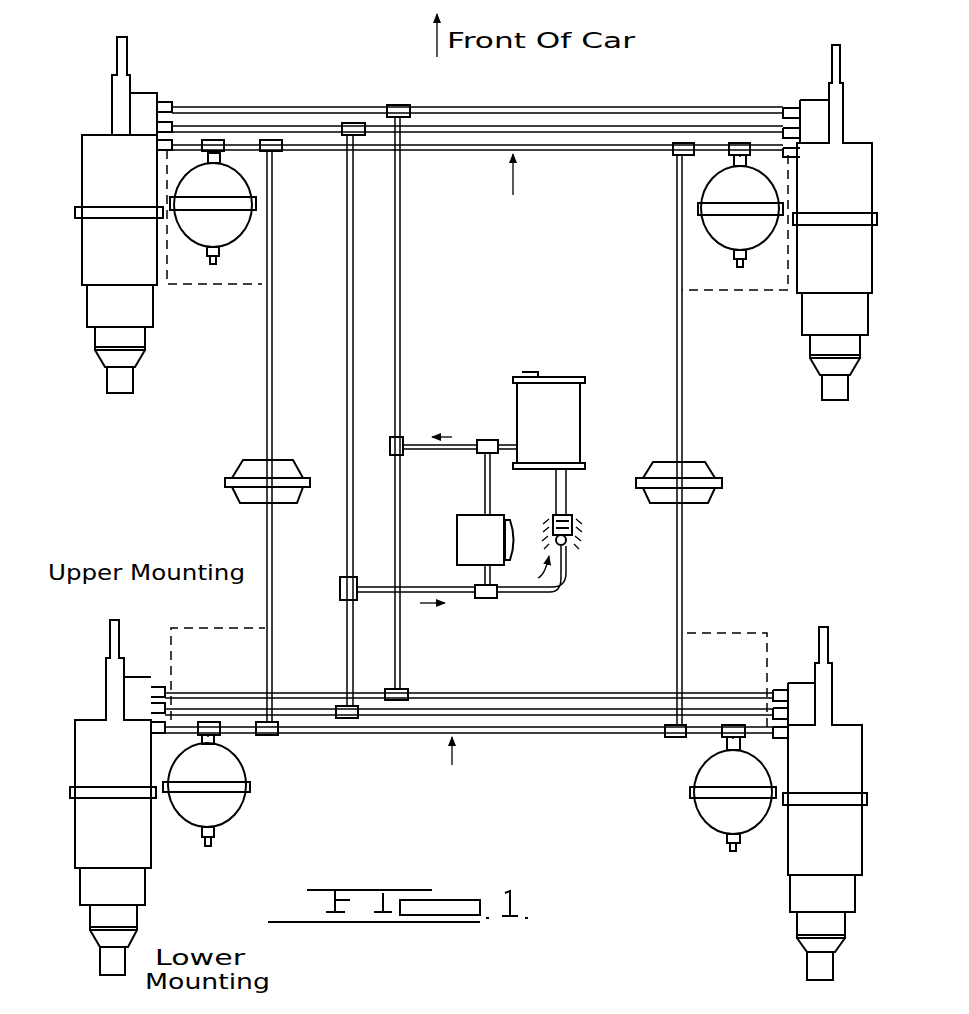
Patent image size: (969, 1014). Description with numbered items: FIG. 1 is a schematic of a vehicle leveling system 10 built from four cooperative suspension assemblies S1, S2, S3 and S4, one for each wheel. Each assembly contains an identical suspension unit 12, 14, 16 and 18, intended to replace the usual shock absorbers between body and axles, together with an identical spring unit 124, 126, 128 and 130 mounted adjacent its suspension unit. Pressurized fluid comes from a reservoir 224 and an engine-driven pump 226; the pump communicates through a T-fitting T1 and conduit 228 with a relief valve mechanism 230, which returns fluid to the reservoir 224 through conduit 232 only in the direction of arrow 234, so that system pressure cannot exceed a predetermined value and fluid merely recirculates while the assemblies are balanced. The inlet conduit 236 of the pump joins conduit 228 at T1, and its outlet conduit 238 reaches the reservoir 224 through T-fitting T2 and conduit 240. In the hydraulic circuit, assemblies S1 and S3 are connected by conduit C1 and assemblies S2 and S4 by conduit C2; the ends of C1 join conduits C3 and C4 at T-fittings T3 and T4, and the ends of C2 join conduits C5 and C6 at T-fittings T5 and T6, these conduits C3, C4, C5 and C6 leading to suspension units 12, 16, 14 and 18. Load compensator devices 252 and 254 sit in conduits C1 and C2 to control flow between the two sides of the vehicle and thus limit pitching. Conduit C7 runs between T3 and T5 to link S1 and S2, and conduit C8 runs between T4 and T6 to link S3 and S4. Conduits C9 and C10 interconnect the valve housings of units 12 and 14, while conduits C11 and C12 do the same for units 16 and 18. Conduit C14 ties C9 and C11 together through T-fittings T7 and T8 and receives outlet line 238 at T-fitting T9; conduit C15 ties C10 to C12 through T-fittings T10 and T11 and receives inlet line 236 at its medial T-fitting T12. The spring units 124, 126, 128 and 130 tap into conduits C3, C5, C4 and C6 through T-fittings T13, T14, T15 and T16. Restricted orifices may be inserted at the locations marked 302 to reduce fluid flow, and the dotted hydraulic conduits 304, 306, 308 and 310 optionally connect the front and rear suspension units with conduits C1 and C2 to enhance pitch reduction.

The vehicle leveling system 10 is at (642, 84).
The suspension unit 12 is at (858, 142).
The suspension unit 14 is at (96, 134).
The suspension unit 16 is at (858, 724).
The suspension unit 18 is at (88, 717).
The suspension assembly S1 is at (798, 99).
The suspension assembly S2 is at (152, 62).
The suspension assembly S3 is at (846, 667).
The suspension assembly S4 is at (149, 659).
The spring unit 124 is at (737, 268).
The spring unit 126 is at (245, 237).
The spring unit 128 is at (690, 781).
The spring unit 130 is at (242, 820).
The fluid reservoir 224 is at (512, 398).
The fluid pump 226 is at (470, 568).
The fluid conduit 228 is at (540, 597).
The relief valve mechanism 230 is at (620, 535).
The conduit 232 is at (559, 485).
The arrow 234 is at (575, 580).
The inlet conduit 236 is at (425, 572).
The outlet conduit 238 is at (487, 472).
The conduit 240 is at (510, 445).
The load compensator device 252 is at (713, 462).
The load compensator device 254 is at (234, 468).
The restricted orifice locations 302 is at (186, 140).
The hydraulic conduit 304 is at (770, 293).
The hydraulic conduit 306 is at (240, 288).
The hydraulic conduit 308 is at (768, 632).
The hydraulic conduit 310 is at (183, 627).
The hydraulic conduit C1 is at (682, 388).
The hydraulic conduit C2 is at (272, 395).
The conduit C3 is at (707, 147).
The conduit C4 is at (700, 728).
The conduit C5 is at (245, 142).
The conduit C6 is at (243, 725).
The conduit C7 is at (585, 152).
The conduit C8 is at (555, 733).
The conduit C9 is at (492, 107).
The conduit C10 is at (480, 133).
The conduit C11 is at (537, 693).
The conduit C12 is at (510, 718).
The conduit C14 is at (401, 297).
The conduit C15 is at (320, 420).
The T-fitting T1 is at (490, 600).
The T-fitting T2 is at (490, 440).
The T-fitting T3 is at (672, 156).
The T-fitting T4 is at (673, 738).
The T-fitting T5 is at (272, 140).
The T-fitting T6 is at (272, 737).
The T-fitting T7 is at (398, 105).
The T-fitting T8 is at (395, 700).
The T-fitting T9 is at (388, 455).
The T-fitting T10 is at (340, 137).
The T-fitting T11 is at (348, 735).
The T-fitting T12 is at (340, 585).
The T-fitting T13 is at (738, 143).
The T-fitting T14 is at (214, 140).
The T-fitting T15 is at (733, 727).
The T-fitting T16 is at (211, 722).